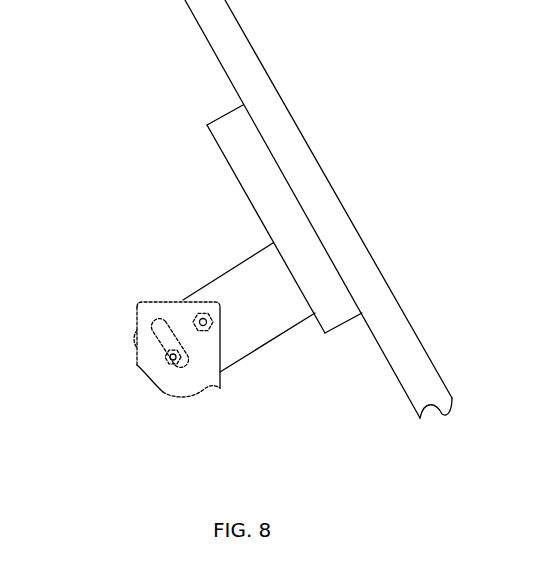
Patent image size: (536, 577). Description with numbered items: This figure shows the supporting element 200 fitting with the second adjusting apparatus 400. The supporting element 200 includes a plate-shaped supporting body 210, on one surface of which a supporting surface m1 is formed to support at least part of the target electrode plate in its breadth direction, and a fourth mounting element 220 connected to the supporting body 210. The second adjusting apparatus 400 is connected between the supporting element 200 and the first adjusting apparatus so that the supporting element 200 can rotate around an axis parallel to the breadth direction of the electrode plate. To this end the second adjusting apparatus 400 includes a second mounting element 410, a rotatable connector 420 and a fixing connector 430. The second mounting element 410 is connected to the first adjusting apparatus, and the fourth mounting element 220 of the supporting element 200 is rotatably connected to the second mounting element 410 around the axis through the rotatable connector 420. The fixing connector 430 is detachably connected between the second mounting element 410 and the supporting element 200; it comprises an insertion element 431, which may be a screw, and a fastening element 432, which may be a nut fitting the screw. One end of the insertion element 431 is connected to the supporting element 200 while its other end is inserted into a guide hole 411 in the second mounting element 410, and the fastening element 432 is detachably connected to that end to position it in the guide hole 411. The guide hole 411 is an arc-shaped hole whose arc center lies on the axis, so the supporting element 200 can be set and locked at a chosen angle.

The supporting surface m1 is at (320, 167).
The supporting element 200 is at (130, 182).
The supporting body 210 is at (228, 70).
The fourth mounting element 220 is at (265, 255).
The second adjusting apparatus 400 is at (120, 290).
The second mounting element 410 is at (142, 371).
The guide hole 411 is at (152, 333).
The rotatable connector 420 is at (212, 322).
The fixing connector 430 is at (213, 442).
The insertion element 431 is at (172, 364).
The fastening element 432 is at (203, 332).